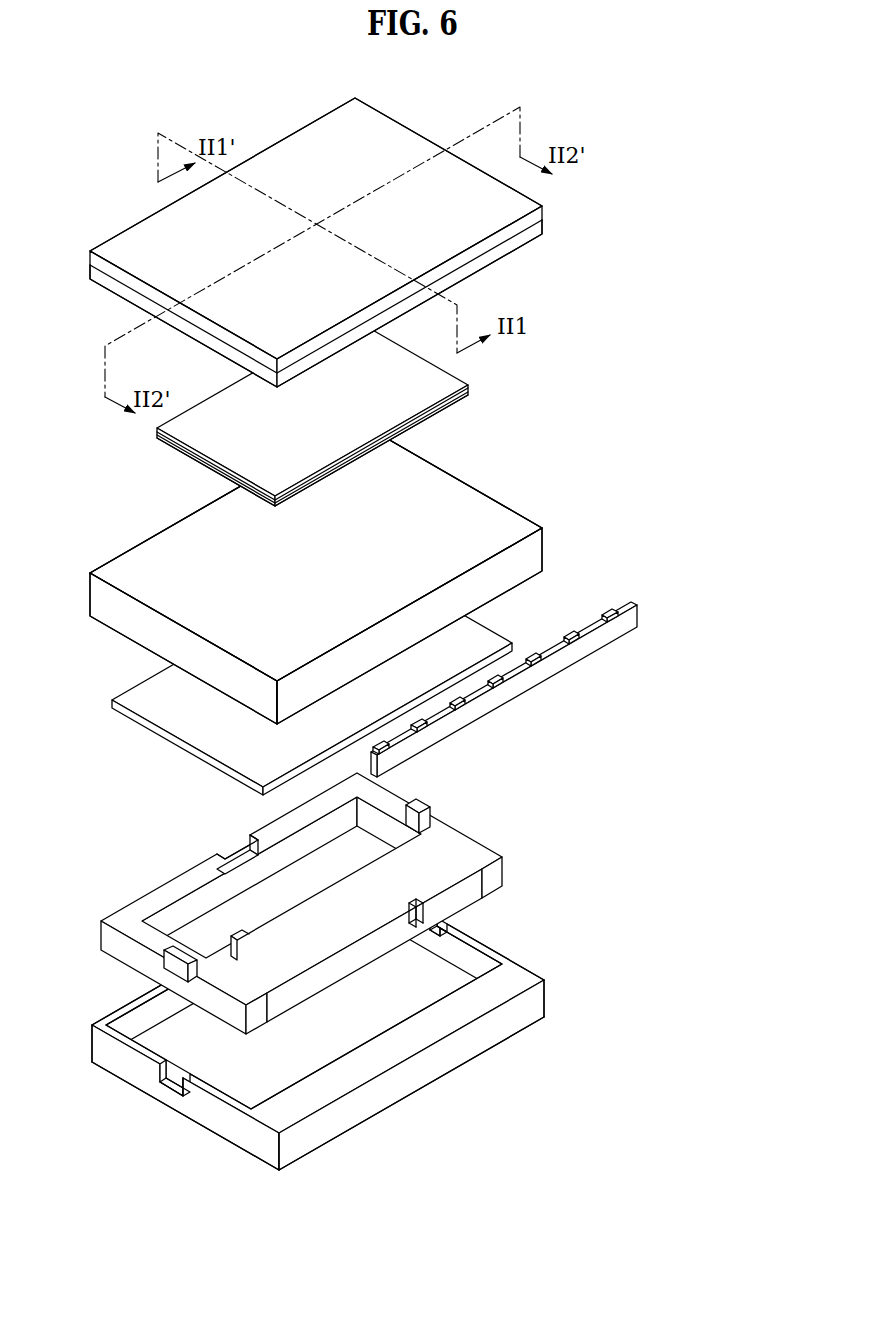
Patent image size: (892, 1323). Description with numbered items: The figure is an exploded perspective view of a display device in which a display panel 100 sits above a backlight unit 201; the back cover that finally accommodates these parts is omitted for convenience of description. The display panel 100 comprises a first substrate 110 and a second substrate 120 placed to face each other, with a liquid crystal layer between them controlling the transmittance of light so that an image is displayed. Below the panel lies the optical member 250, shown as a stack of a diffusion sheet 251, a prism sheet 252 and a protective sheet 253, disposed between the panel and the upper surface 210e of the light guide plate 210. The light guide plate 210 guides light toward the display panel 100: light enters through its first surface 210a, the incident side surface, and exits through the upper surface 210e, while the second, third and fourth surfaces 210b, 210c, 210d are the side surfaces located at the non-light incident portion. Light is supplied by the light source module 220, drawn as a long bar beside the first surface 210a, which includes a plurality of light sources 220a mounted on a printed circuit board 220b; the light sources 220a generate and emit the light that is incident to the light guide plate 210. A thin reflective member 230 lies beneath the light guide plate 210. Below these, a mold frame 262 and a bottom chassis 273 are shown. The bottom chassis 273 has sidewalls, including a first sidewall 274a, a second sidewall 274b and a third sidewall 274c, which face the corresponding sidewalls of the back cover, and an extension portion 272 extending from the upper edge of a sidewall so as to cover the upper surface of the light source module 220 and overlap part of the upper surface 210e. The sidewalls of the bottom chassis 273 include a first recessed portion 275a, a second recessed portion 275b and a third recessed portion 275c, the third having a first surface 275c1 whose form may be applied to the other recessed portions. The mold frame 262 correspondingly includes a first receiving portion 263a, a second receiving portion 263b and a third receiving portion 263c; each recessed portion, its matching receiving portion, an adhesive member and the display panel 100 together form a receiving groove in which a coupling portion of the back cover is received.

The display panel 100 is at (622, 206).
The first substrate 110 is at (546, 222).
The second substrate 120 is at (546, 208).
The backlight unit 201 is at (777, 350).
The light guide plate 210 is at (516, 522).
The first surface 210a is at (520, 556).
The second surface 210b is at (163, 523).
The third surface 210c is at (502, 493).
The fourth surface 210d is at (152, 630).
The upper surface 210e is at (424, 508).
The light source module 220 is at (719, 573).
The light source 220a is at (618, 610).
The printed circuit board 220b is at (632, 618).
The reflective member 230 is at (482, 638).
The optical member 250 is at (549, 356).
The diffusion sheet 251 is at (470, 392).
The prism sheet 252 is at (470, 388).
The protective sheet 253 is at (470, 384).
The mold frame 262 is at (473, 830).
The first receiving portion 263a is at (222, 855).
The second receiving portion 263b is at (432, 832).
The third receiving portion 263c is at (170, 962).
The extension portion 272 is at (510, 980).
The bottom chassis 273 is at (565, 1000).
The first sidewall 274a is at (310, 893).
The second sidewall 274b is at (495, 938).
The third sidewall 274c is at (235, 1118).
The first recessed portion 275a is at (228, 958).
The second recessed portion 275b is at (430, 917).
The third recessed portion 275c is at (150, 1076).
The first surface 275c1 is at (170, 1086).